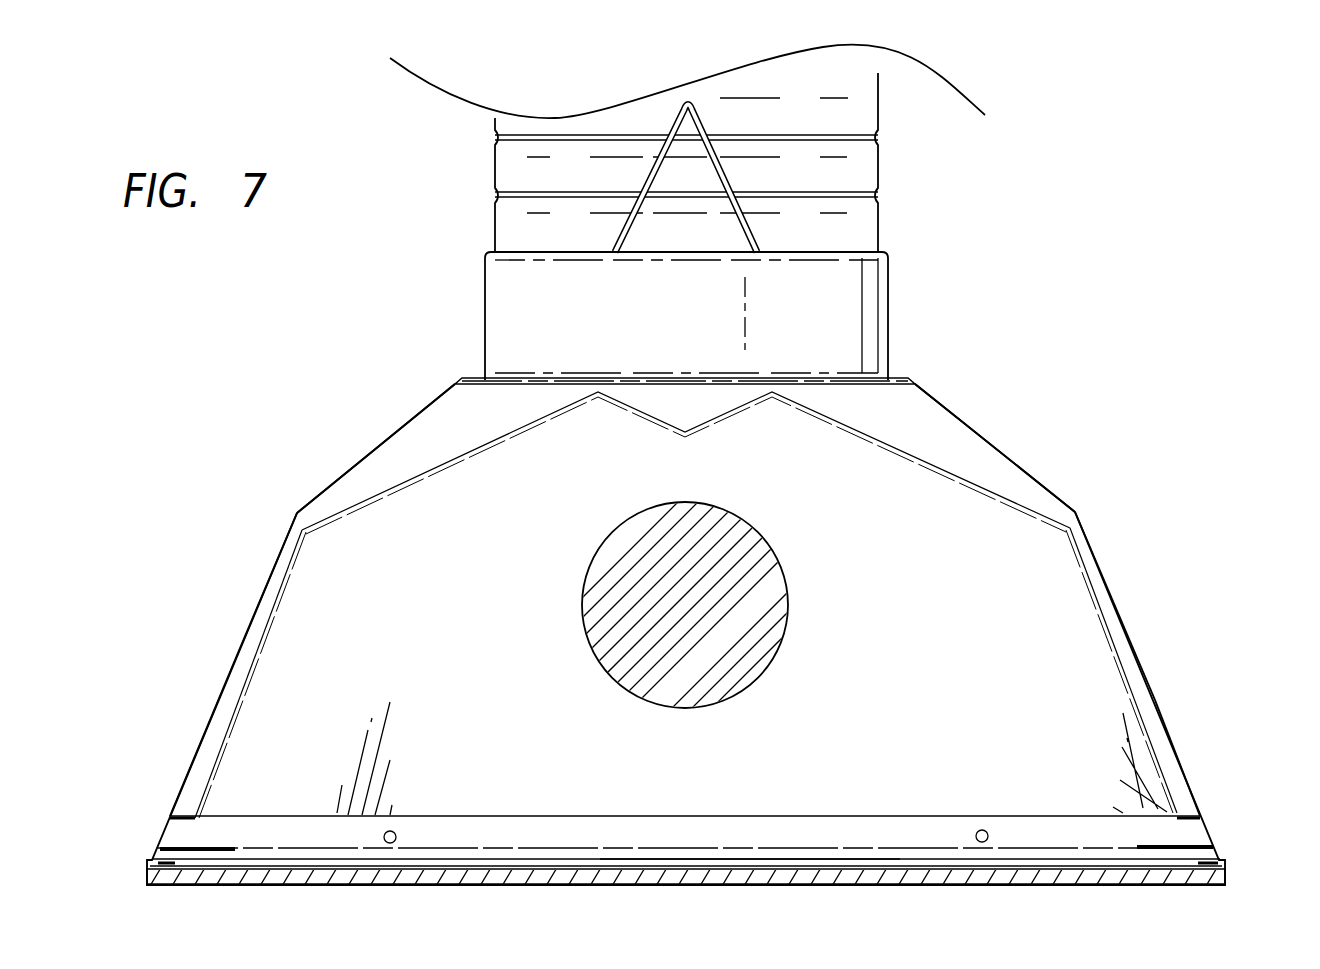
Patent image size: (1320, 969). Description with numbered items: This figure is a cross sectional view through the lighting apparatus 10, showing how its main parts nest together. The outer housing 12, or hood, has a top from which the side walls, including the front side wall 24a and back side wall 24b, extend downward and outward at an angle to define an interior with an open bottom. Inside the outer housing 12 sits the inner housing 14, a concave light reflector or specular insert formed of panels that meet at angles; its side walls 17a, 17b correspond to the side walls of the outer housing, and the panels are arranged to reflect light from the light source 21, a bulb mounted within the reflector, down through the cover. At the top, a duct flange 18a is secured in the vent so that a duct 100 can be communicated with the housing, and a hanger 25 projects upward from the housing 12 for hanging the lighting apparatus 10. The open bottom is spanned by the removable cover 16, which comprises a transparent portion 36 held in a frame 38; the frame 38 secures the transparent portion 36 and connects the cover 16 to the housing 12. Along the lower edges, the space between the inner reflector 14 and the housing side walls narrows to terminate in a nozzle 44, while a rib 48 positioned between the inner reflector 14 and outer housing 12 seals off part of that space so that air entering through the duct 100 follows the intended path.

The lighting apparatus 10 is at (1118, 290).
The outer housing 12 is at (995, 447).
The inner housing 14 is at (1037, 513).
The cover 16 is at (1133, 877).
The side wall 17a is at (242, 682).
The side wall 17b is at (1145, 728).
The duct flange 18a is at (818, 310).
The light source 21 is at (770, 610).
The front side wall 24a is at (240, 640).
The back side wall 24b is at (1122, 617).
The hanger 25 is at (667, 118).
The transparent portion 36 is at (777, 867).
The frame 38 is at (1225, 868).
The nozzle 44 is at (188, 840).
The rib 48 is at (418, 442).
The duct 100 is at (863, 175).